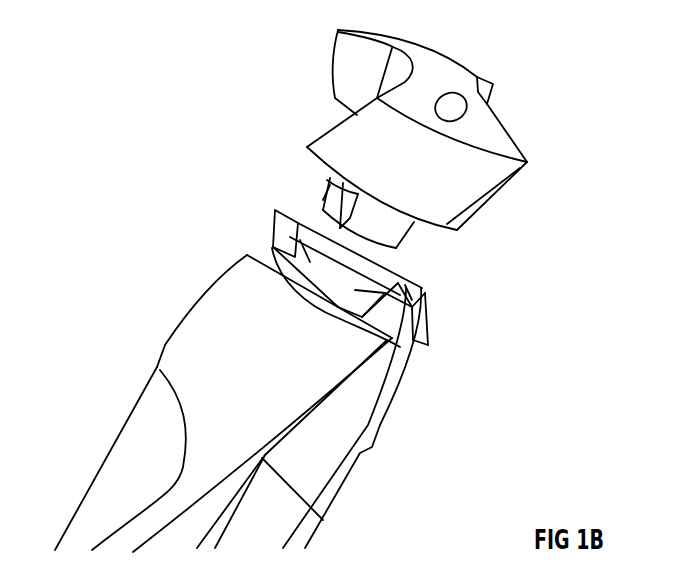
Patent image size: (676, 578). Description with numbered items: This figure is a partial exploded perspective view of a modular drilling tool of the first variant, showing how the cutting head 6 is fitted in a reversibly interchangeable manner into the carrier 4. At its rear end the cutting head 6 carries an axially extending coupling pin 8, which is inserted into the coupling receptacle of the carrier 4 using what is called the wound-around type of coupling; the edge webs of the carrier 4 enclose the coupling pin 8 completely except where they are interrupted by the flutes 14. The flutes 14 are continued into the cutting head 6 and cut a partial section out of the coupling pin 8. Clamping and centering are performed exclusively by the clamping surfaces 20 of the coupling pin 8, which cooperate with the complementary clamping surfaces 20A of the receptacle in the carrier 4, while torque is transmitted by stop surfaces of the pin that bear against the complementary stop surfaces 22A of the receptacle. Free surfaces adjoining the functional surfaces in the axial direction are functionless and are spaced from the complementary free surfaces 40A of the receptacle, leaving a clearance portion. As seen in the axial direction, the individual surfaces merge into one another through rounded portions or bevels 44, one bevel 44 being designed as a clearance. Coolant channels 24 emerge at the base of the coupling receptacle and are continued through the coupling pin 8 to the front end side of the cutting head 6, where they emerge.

The cutting head 6 is at (545, 112).
The coolant channels 24 is at (455, 108).
The clamping surfaces 20 is at (385, 232).
The complementary free surfaces 40A is at (330, 188).
The coupling pin 8 is at (325, 198).
The complementary clamping surfaces 20A is at (318, 267).
The bevels 44 is at (420, 288).
The complementary stop surfaces 22A is at (385, 322).
The carrier 4 is at (407, 436).
The flutes 14 is at (253, 515).